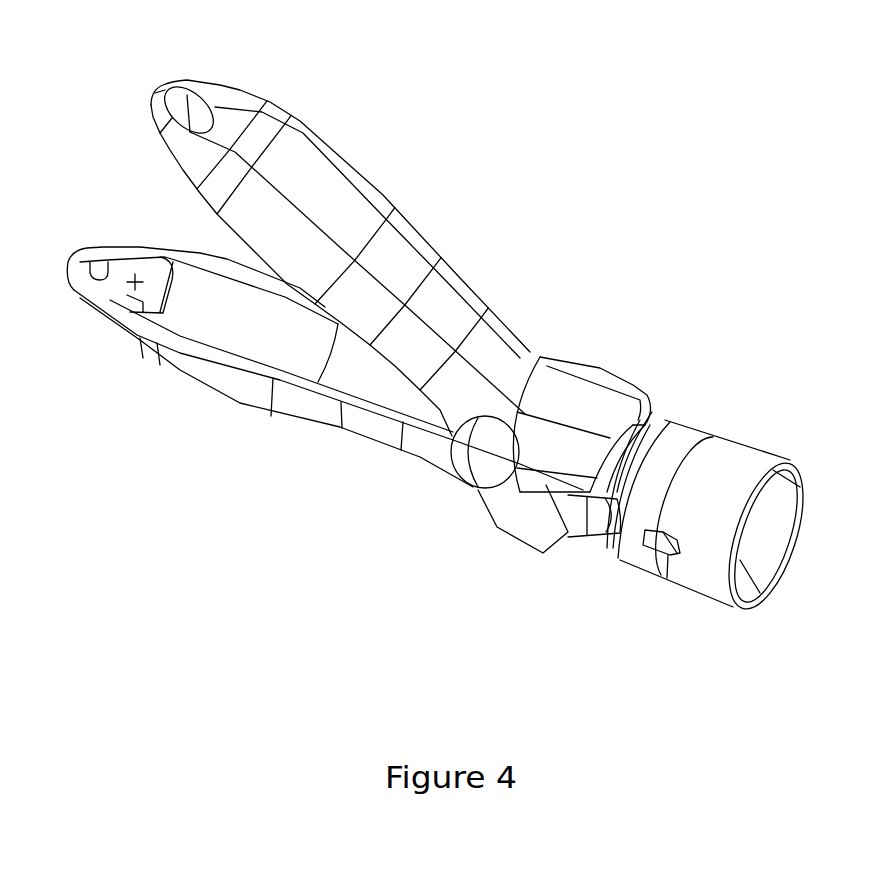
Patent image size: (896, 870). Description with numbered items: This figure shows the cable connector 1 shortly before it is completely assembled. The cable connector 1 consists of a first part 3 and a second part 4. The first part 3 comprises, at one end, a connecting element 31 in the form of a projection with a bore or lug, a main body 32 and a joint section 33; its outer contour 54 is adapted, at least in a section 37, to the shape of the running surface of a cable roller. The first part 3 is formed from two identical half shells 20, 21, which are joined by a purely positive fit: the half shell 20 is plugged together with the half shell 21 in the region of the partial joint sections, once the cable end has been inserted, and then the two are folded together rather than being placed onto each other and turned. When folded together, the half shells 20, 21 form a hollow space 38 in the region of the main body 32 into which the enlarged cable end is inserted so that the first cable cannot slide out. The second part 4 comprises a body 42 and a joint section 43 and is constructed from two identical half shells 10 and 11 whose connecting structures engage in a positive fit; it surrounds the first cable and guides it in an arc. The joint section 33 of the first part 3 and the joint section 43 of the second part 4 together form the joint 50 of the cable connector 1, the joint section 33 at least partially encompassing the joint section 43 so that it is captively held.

The cable connector 1 is at (577, 137).
The first part 3 is at (438, 193).
The second part 4 is at (680, 338).
The half shell 10 is at (690, 460).
The half shell 11 is at (745, 598).
The half shell 20 is at (356, 193).
The half shell 21 is at (183, 367).
The connecting element 31 is at (175, 107).
The main body 32 is at (308, 178).
The joint section 33 is at (591, 374).
The section 37 is at (452, 288).
The hollow space 38 is at (272, 332).
The body 42 is at (697, 542).
The joint section 43 is at (582, 525).
The joint 50 is at (493, 529).
The outer contour 54 is at (347, 430).